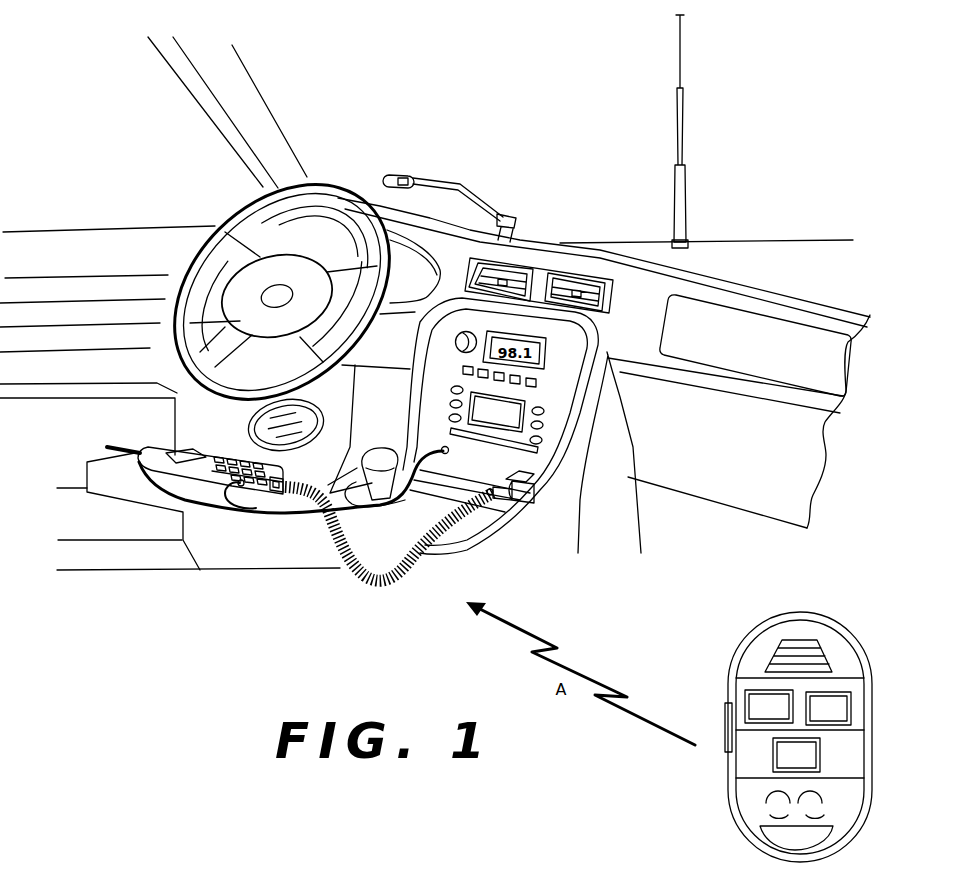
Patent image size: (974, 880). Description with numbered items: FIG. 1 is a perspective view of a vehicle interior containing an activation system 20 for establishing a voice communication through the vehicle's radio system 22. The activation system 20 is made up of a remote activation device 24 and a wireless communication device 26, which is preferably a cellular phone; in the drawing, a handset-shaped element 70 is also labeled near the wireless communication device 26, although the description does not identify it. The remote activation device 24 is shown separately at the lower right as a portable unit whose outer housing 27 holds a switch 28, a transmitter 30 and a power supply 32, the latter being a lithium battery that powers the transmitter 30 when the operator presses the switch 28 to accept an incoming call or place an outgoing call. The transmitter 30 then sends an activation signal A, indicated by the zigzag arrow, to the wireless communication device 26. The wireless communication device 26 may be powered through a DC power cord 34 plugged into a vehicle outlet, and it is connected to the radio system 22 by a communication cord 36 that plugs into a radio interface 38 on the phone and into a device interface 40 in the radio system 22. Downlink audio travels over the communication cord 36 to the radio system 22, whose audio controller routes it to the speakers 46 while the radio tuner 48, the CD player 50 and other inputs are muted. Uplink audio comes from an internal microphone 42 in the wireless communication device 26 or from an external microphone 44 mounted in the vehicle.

The activation system 20 is at (762, 202).
The radio system 22 is at (588, 433).
The remote activation device 24 is at (816, 717).
The wireless communication device 26 is at (140, 505).
The outer housing 27 is at (871, 748).
The switch 28 is at (796, 652).
The transmitter 30 is at (723, 746).
The power supply 32 is at (848, 830).
The DC power cord 34 is at (380, 582).
The communication cord 36 is at (264, 513).
The radio interface 38 is at (224, 500).
The device interface 40 is at (448, 452).
The internal microphone 42 is at (274, 471).
The external microphone 44 is at (462, 186).
The speakers 46 is at (250, 423).
The radio tuner 48 is at (463, 331).
The CD player 50 is at (530, 455).
The cellular telephone 70 is at (168, 453).